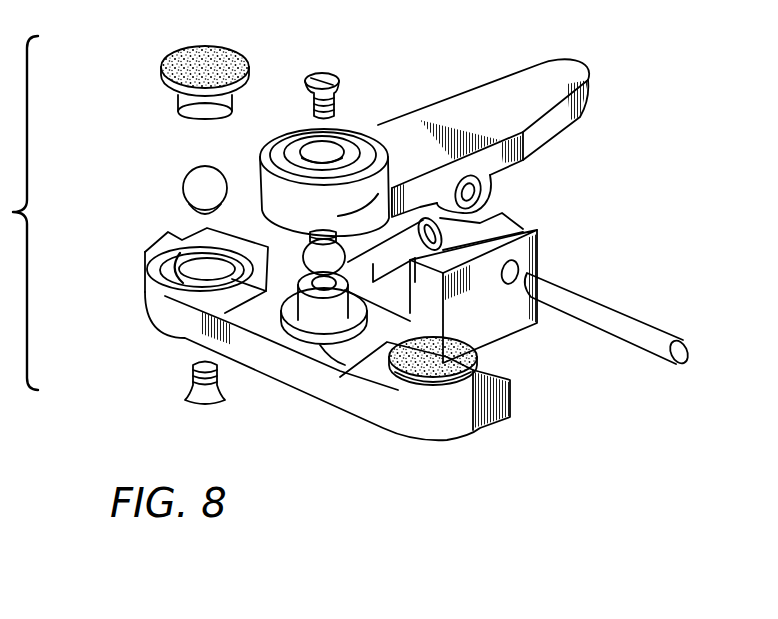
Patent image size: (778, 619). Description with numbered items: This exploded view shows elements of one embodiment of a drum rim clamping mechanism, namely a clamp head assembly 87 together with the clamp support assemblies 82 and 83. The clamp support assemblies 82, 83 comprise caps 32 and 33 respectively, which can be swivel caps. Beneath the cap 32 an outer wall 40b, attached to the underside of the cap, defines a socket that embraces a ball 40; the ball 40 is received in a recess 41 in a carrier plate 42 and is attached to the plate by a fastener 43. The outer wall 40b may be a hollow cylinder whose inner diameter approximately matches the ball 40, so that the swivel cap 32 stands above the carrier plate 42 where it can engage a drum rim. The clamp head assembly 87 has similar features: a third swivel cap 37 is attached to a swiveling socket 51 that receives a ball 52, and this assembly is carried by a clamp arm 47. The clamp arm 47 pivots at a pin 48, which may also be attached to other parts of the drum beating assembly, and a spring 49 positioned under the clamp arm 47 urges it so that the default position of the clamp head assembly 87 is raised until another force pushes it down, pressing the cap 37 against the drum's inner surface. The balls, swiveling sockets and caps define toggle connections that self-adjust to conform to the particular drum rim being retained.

The cap 32 is at (215, 50).
The cap 33 is at (447, 377).
The swivel cap 37 is at (297, 343).
The ball 40 is at (184, 189).
The outer wall 40b is at (191, 112).
The recess 41 is at (193, 270).
The carrier plate 42 is at (337, 388).
The fastener 43 is at (203, 402).
The clamp arm 47 is at (517, 82).
The pin 48 is at (646, 330).
The spring 49 is at (447, 240).
The socket 51 is at (307, 303).
The ball 52 is at (313, 262).
The clamp support assembly 82 is at (146, 102).
The clamp support assembly 83 is at (403, 386).
The clamp head assembly 87 is at (340, 213).